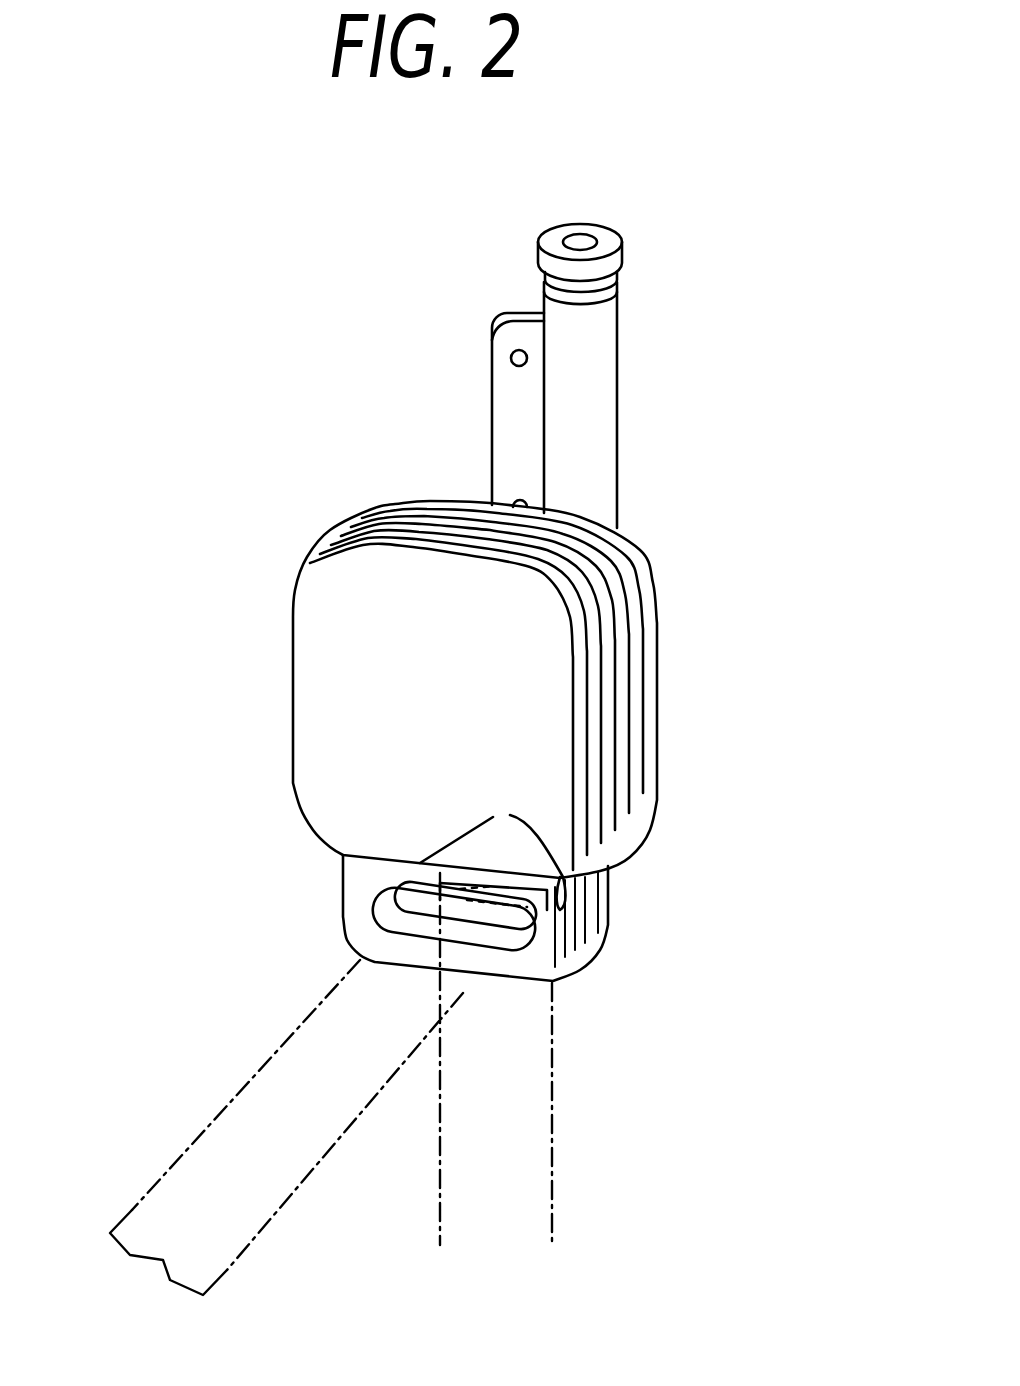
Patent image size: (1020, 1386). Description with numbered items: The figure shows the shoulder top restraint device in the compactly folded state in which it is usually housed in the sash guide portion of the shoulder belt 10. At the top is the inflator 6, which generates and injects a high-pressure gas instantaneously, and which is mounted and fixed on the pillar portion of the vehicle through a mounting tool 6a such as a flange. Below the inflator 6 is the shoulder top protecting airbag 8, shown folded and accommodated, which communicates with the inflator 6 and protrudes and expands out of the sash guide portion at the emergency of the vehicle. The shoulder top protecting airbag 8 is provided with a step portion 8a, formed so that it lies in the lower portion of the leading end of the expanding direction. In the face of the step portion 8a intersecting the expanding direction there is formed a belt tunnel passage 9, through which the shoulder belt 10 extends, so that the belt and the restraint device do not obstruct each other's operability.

The inflator 6 is at (603, 378).
The mounting tool 6a is at (500, 385).
The shoulder top protecting airbag 8 is at (365, 645).
The step portion 8a is at (350, 893).
The belt tunnel passage 9 is at (471, 928).
The shoulder belt 10 is at (203, 1222).